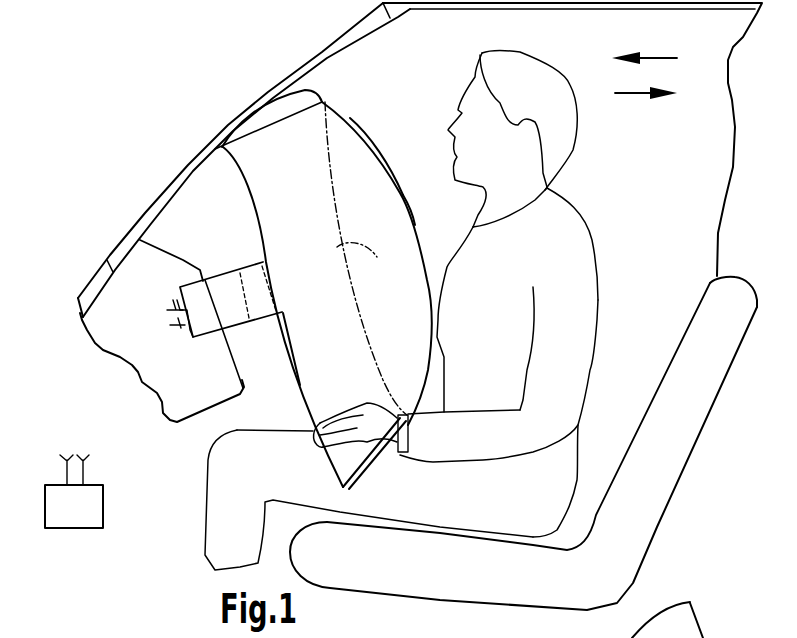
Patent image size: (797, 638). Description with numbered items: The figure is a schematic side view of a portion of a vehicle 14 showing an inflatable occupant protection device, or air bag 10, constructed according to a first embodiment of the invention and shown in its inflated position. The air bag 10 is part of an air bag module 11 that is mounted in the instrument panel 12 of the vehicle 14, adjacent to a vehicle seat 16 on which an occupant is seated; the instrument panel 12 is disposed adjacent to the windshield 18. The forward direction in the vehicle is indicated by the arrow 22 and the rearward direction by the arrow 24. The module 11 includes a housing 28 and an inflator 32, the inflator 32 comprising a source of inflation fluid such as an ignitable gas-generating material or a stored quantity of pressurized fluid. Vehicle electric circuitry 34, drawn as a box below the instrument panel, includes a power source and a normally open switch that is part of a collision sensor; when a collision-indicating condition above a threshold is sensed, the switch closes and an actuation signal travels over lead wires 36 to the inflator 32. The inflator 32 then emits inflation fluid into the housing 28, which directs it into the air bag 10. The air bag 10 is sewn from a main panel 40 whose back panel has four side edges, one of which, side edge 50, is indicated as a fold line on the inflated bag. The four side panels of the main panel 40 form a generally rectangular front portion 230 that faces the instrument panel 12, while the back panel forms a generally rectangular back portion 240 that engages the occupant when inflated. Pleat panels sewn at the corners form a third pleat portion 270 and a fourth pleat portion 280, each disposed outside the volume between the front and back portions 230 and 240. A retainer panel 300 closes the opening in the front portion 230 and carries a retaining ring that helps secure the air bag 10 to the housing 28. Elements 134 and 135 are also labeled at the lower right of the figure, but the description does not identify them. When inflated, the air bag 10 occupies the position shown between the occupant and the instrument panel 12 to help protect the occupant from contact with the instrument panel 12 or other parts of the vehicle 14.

The inflatable occupant protection device 10 is at (348, 104).
The air bag module 11 is at (213, 249).
The instrument panel 12 is at (152, 248).
The vehicle 14 is at (68, 262).
The vehicle seat 16 is at (707, 421).
The windshield 18 is at (219, 128).
The arrow 22 is at (668, 58).
The arrow 24 is at (630, 97).
The housing 28 is at (204, 333).
The inflator 32 is at (180, 300).
The vehicle electric circuitry 34 is at (72, 513).
The lead wires 36 is at (177, 327).
The main panel 40 is at (405, 197).
The side edge 50 is at (366, 258).
The tether 134 is at (710, 637).
The tether attachment 135 is at (690, 598).
The front portion 230 is at (282, 337).
The back portion 240 is at (387, 150).
The third pleat portion 270 is at (342, 465).
The fourth pleat portion 280 is at (273, 132).
The retainer panel 300 is at (241, 268).